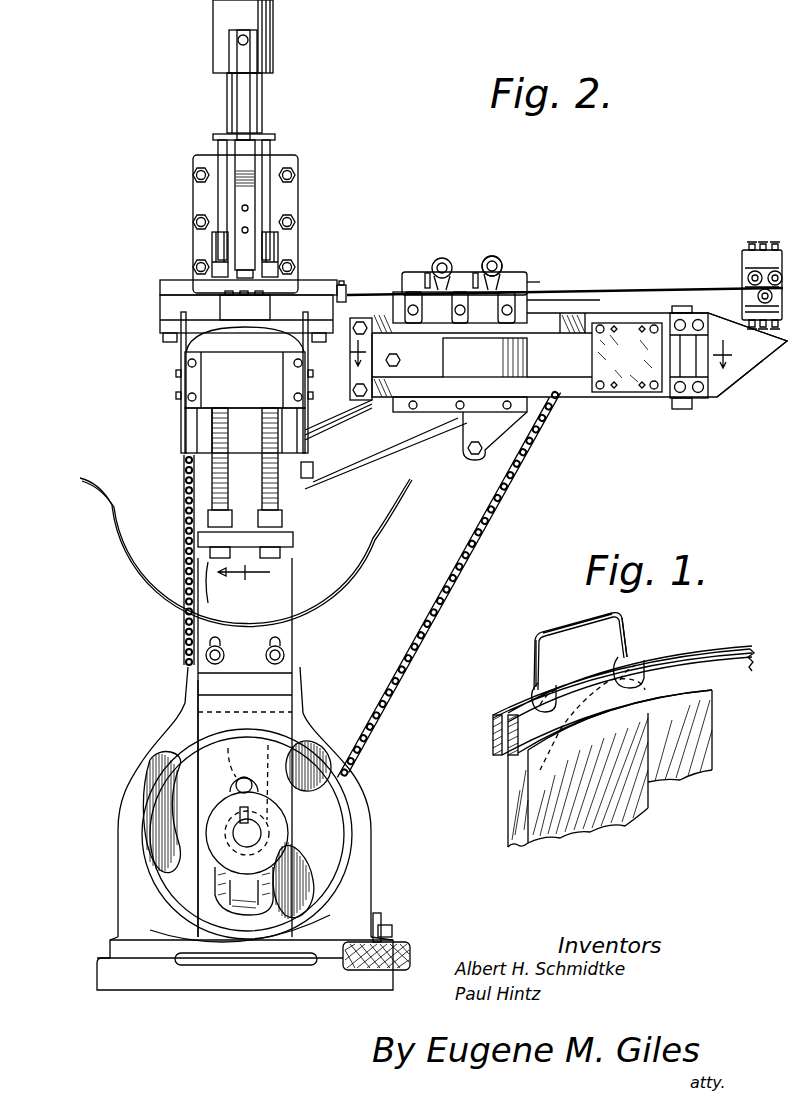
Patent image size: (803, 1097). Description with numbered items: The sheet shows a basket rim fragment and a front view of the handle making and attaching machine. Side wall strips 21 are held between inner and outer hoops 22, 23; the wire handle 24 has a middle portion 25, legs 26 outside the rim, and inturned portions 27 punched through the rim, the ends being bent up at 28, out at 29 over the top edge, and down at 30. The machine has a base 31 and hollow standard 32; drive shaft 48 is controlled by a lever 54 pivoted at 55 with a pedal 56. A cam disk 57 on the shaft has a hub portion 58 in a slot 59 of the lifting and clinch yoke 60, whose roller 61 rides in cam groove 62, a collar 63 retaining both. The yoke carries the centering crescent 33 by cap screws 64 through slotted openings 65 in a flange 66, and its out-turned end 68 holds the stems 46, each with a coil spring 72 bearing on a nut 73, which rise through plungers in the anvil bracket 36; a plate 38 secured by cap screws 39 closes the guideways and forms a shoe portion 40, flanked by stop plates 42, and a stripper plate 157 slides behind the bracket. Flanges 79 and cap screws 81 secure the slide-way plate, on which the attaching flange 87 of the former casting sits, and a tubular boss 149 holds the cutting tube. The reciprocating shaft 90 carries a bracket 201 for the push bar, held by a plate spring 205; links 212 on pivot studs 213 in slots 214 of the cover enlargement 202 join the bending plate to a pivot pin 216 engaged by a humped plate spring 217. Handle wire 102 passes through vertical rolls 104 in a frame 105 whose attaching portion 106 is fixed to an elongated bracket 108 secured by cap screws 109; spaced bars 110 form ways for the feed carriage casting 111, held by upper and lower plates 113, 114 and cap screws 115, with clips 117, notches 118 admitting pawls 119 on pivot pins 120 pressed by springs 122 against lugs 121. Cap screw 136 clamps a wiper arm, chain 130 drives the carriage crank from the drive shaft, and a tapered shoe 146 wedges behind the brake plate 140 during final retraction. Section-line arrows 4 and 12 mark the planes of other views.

In FIG. 2, the bracket 201 is at (266, 36).
In FIG. 2, the plate spring 205 is at (248, 88).
In FIG. 2, the vertically reciprocable shaft 90 is at (262, 113).
In FIG. 2, the pivot pin 216 is at (214, 136).
In FIG. 2, the links 212 is at (271, 165).
In FIG. 2, the plate spring 217 is at (247, 194).
In FIG. 2, the enlargement of the cover 202 is at (237, 205).
In FIG. 2, the slot 214 is at (277, 240).
In FIG. 2, the pivot stud 213 is at (277, 255).
In FIG. 2, the attaching flange 87 is at (318, 283).
In FIG. 2, the tubular boss 149 is at (346, 290).
In FIG. 2, the laterally extending flange 79 is at (366, 322).
In FIG. 2, the cap screws 81 is at (165, 340).
In FIG. 2, the stripper plate 157 is at (245, 305).
In FIG. 2, the stop plate 42 is at (180, 346).
In FIG. 2, the shoe portion 40 is at (245, 339).
In FIG. 2, the plate 38 is at (245, 380).
In FIG. 2, the cap screws 39 is at (197, 396).
In FIG. 2, the anvil bracket 36 is at (200, 432).
In FIG. 2, the heavy coil spring 72 is at (262, 470).
In FIG. 2, the cap screws 109 is at (330, 475).
In FIG. 2, the elongated bracket 108 is at (378, 455).
In FIG. 2, the nut 73 is at (272, 517).
In FIG. 2, the out-turned upper end of the yoke 68 is at (294, 540).
In FIG. 2, the stems 46 is at (278, 558).
In FIG. 2, the section line 4 is at (244, 583).
In FIG. 2, the chain 130 is at (448, 585).
In FIG. 2, the centering crescent 33 is at (104, 555).
In FIG. 2, the hollow standard 32 is at (306, 692).
In FIG. 2, the flange 66 is at (245, 655).
In FIG. 2, the slotted openings 65 is at (285, 643).
In FIG. 2, the cap screws 64 is at (280, 655).
In FIG. 2, the combined basket lifting and handle clinch yoke 60 is at (210, 808).
In FIG. 2, the roller 61 is at (235, 770).
In FIG. 2, the hub portion 58 is at (262, 775).
In FIG. 2, the cam disk 57 is at (352, 800).
In FIG. 2, the cam groove 62 is at (327, 851).
In FIG. 2, the collar 63 is at (283, 830).
In FIG. 2, the drive shaft 48 is at (237, 838).
In FIG. 2, the slot 59 is at (244, 891).
In FIG. 2, the base 31 is at (97, 975).
In FIG. 2, the pedal 56 is at (406, 946).
In FIG. 2, the lever 54 is at (377, 912).
In FIG. 2, the pivot 55 is at (392, 930).
In FIG. 2, the handle wire 102 is at (618, 290).
In FIG. 2, the section line 12 is at (542, 354).
In FIG. 2, the carriage casting 111 is at (410, 362).
In FIG. 2, the tapered shoe 146 is at (485, 357).
In FIG. 2, the lower plate 114 is at (422, 413).
In FIG. 2, the cap screws 115 is at (490, 413).
In FIG. 2, the cap screw 136 is at (474, 455).
In FIG. 2, the notches 118 is at (460, 307).
In FIG. 2, the clips 117 is at (515, 282).
In FIG. 2, the lug 121 is at (440, 259).
In FIG. 2, the pawls 119 is at (458, 275).
In FIG. 2, the pivot pins 120 is at (496, 258).
In FIG. 2, the spring 122 is at (535, 272).
In FIG. 2, the upper plate 113 is at (563, 307).
In FIG. 2, the spaced bars 110 is at (565, 320).
In FIG. 2, the plate 140 is at (630, 385).
In FIG. 2, the attaching portion 106 is at (775, 362).
In FIG. 2, the vertical rolls 104 is at (748, 270).
In FIG. 2, the frame 105 is at (745, 255).
In FIG. 1, the inner hoop 22 is at (698, 660).
In FIG. 1, the outer hoop 23 is at (495, 735).
In FIG. 1, the side wall strips 21 is at (562, 840).
In FIG. 1, the inturned portions 27 is at (498, 782).
In FIG. 1, the downturned wire extremities 30 is at (620, 720).
In FIG. 1, the handle 24 is at (528, 629).
In FIG. 1, the middle portion 25 is at (556, 625).
In FIG. 1, the legs 26 is at (626, 628).
In FIG. 1, the upturned wire portions 28 is at (556, 690).
In FIG. 1, the outwardly bent wire portions 29 is at (548, 685).